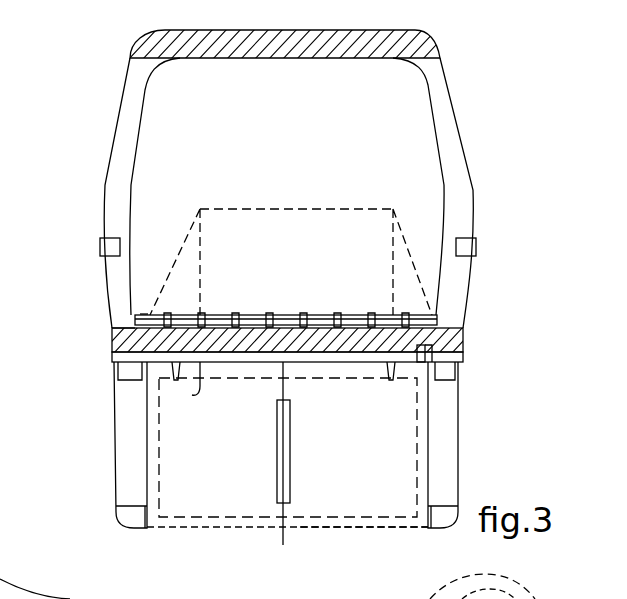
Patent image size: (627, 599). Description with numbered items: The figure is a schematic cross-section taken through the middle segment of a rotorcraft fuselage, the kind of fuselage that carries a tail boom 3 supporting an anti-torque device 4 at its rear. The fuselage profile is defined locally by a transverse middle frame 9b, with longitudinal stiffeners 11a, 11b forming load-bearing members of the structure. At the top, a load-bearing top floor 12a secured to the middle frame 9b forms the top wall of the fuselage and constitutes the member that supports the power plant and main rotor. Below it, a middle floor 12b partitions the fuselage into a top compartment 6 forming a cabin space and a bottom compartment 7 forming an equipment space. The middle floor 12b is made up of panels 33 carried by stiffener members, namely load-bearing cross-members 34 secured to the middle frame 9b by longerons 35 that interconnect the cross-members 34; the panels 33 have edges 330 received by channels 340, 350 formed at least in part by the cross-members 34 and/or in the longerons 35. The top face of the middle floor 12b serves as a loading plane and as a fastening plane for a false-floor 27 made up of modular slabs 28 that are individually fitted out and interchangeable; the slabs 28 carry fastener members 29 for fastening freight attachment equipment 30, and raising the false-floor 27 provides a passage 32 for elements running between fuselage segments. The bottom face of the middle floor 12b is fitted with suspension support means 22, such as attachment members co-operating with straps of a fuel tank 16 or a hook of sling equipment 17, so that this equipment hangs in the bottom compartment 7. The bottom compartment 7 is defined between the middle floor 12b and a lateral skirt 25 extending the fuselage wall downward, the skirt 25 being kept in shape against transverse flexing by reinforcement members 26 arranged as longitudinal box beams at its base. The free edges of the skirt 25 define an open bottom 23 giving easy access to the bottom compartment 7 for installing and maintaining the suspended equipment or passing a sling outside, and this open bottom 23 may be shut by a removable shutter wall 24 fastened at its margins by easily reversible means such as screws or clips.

The tail boom 3 is at (270, 596).
The anti-torque device 4 is at (3, 192).
The top compartment 6 is at (284, 123).
The bottom compartment 7 is at (430, 441).
The middle frame 9b is at (468, 142).
The longitudinal stiffener 11a is at (103, 257).
The longitudinal stiffener 11b is at (470, 258).
The top floor 12a is at (437, 42).
The middle floor 12b is at (463, 340).
The fuel tank 16 is at (236, 450).
The sling equipment 17 is at (292, 432).
The suspension support means 22 is at (391, 372).
The open bottom 23 is at (241, 509).
The removable shutter wall 24 is at (367, 528).
The lateral skirt 25 is at (116, 436).
The reinforcement members 26 is at (116, 500).
The false-floor 27 is at (220, 298).
The modular slabs 28 is at (357, 315).
The fastener members 29 is at (143, 314).
The freight attachment equipment 30 is at (381, 241).
The passage 32 is at (310, 315).
The panels 33 is at (113, 328).
The cross-members 34 is at (177, 381).
The longerons 35 is at (118, 372).
The edges 330 is at (433, 342).
The channel 340 is at (426, 349).
The channel 350 is at (432, 354).